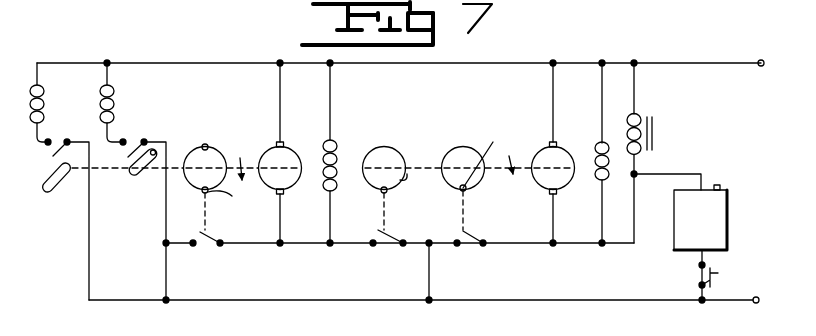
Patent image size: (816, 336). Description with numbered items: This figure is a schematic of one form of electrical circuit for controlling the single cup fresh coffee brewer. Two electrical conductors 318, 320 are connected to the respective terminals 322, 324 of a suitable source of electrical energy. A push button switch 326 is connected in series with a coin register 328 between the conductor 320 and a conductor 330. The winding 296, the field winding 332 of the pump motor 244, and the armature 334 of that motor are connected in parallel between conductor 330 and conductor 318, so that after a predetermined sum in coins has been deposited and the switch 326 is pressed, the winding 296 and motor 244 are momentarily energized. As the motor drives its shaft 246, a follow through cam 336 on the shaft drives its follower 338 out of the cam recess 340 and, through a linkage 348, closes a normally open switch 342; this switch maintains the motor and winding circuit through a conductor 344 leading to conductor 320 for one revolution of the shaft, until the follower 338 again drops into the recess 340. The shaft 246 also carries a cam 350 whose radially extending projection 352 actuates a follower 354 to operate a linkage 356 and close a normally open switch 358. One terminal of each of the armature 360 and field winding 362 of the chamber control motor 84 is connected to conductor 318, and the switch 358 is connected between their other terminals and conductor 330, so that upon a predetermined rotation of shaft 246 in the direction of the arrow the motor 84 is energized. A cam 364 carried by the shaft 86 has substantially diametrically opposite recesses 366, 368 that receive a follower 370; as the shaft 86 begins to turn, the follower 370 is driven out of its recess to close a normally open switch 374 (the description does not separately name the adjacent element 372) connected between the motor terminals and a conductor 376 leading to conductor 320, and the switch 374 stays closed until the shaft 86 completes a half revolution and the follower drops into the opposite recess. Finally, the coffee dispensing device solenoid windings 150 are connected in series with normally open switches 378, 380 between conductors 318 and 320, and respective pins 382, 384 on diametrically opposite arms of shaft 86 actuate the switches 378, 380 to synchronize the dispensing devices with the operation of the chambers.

The chamber control motor 84 is at (342, 112).
The shaft 86 is at (113, 170).
The coffee dispensing device solenoid windings 150 is at (50, 80).
The pump motor 244 is at (562, 86).
The shaft 246 is at (512, 153).
The winding 296 is at (641, 116).
The electrical conductor 318 is at (712, 50).
The electrical conductor 320 is at (662, 302).
The terminal 322 is at (784, 50).
The terminal 324 is at (789, 292).
The push button switch 326 is at (718, 273).
The coin register 328 is at (728, 222).
The conductor 330 is at (626, 246).
The field winding 332 is at (594, 142).
The armature 334 is at (537, 147).
The follow through cam 336 is at (447, 146).
The follower 338 is at (460, 191).
The cam recess 340 is at (493, 143).
The normally open switch 342 is at (470, 230).
The conductor 344 is at (430, 288).
The linkage 348 is at (463, 218).
The cam 350 is at (388, 147).
The radially extending projection 352 is at (418, 167).
The follower 354 is at (378, 210).
The linkage 356 is at (378, 233).
The normally open switch 358 is at (388, 250).
The armature 360 is at (300, 151).
The field winding 362 is at (337, 146).
The cam 364 is at (238, 160).
The recess 366 is at (200, 194).
The recess 368 is at (205, 145).
The follower 370 is at (233, 206).
The switch blade 372 is at (215, 229).
The normally open switch 374 is at (214, 247).
The conductor 376 is at (167, 288).
The normally open switch 378 is at (132, 140).
The normally open switch 380 is at (62, 137).
The pin 382 is at (158, 142).
The pin 384 is at (48, 193).